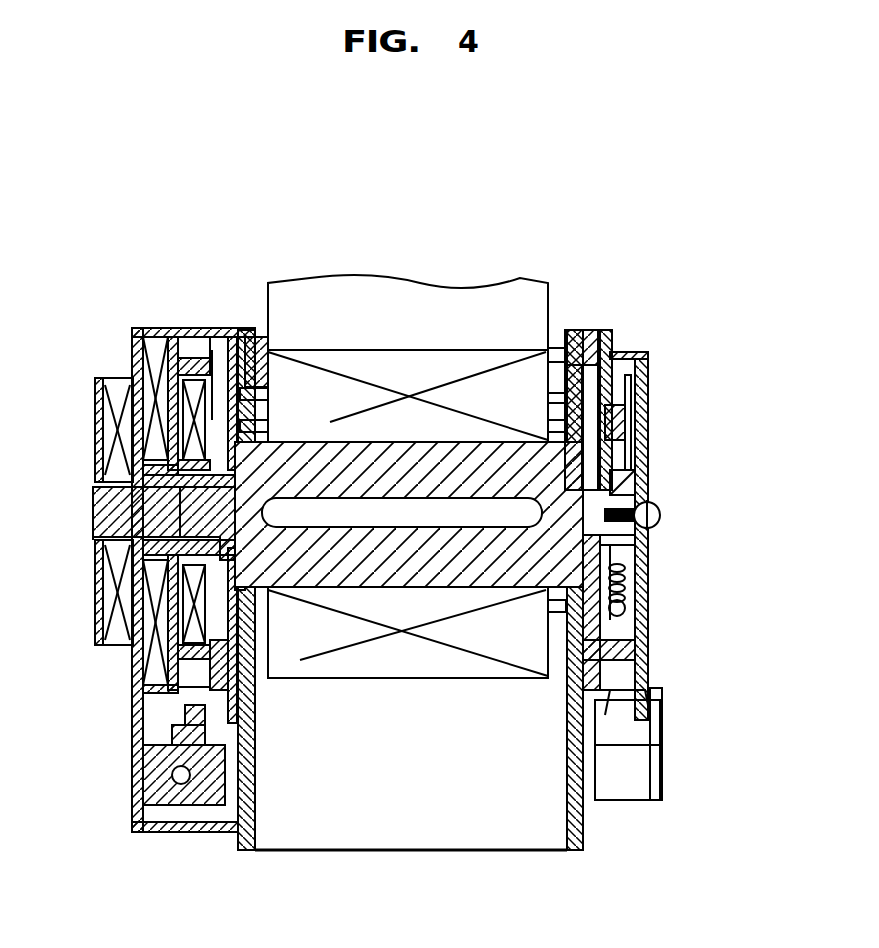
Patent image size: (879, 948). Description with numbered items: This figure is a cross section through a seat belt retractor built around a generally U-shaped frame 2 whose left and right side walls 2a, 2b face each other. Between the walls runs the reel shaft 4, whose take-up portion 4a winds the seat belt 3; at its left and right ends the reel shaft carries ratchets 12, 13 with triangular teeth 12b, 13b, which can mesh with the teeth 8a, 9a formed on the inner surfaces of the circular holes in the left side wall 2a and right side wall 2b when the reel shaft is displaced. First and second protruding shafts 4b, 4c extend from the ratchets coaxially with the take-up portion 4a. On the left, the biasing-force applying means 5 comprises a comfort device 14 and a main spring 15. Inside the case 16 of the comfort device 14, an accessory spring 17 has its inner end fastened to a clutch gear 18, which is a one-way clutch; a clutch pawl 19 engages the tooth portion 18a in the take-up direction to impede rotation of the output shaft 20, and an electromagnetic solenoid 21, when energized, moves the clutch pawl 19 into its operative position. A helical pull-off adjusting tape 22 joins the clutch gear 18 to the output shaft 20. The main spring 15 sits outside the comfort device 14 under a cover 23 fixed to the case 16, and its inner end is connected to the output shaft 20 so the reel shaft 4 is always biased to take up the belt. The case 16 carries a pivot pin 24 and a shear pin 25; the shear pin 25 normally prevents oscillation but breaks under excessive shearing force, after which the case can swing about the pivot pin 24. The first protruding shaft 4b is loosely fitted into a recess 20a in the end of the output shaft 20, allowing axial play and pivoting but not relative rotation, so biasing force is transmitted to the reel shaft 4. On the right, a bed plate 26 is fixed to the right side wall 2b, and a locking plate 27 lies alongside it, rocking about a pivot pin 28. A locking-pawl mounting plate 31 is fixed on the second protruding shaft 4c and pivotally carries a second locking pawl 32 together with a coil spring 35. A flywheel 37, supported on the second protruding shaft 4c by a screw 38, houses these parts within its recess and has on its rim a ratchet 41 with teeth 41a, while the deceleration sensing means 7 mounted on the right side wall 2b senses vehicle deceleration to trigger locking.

The frame 2 is at (405, 852).
The left side wall 2a is at (252, 853).
The right side wall 2b is at (585, 853).
The seat belt 3 is at (485, 293).
The reel shaft 4 is at (412, 567).
The take-up portion 4a is at (468, 572).
The first protruding shaft 4b is at (222, 510).
The second protruding shaft 4c is at (636, 485).
The biasing-force applying means 5 is at (80, 576).
The deceleration sensing means 7 is at (665, 733).
The teeth 8a is at (250, 393).
The teeth 9a is at (560, 398).
The ratchet 12 is at (372, 620).
The teeth 12b is at (250, 428).
The ratchet 13 is at (553, 605).
The teeth 13b is at (560, 425).
The comfort device 14 is at (152, 318).
The main spring 15 is at (110, 403).
The case 16 is at (134, 772).
The accessory spring 17 is at (140, 680).
The clutch gear 18 is at (190, 345).
The tooth portion 18a is at (232, 685).
The clutch pawl 19 is at (200, 735).
The output shaft 20 is at (100, 516).
The recess 20a is at (268, 466).
The electromagnetic solenoid 21 is at (170, 808).
The pull-off adjusting tape 22 is at (238, 582).
The cover 23 is at (100, 452).
The pivot pin 24 is at (250, 348).
The shear pin 25 is at (390, 650).
The bed plate 26 is at (584, 330).
The locking plate 27 is at (606, 330).
The pivot pin 28 is at (555, 353).
The locking-pawl mounting plate 31 is at (615, 557).
The second locking pawl 32 is at (625, 425).
The coil spring 35 is at (624, 600).
The flywheel 37 is at (632, 387).
The screw 38 is at (661, 515).
The ratchet 41 is at (658, 658).
The teeth 41a is at (632, 352).